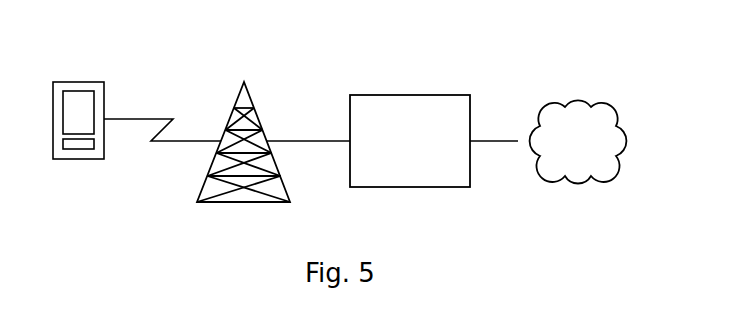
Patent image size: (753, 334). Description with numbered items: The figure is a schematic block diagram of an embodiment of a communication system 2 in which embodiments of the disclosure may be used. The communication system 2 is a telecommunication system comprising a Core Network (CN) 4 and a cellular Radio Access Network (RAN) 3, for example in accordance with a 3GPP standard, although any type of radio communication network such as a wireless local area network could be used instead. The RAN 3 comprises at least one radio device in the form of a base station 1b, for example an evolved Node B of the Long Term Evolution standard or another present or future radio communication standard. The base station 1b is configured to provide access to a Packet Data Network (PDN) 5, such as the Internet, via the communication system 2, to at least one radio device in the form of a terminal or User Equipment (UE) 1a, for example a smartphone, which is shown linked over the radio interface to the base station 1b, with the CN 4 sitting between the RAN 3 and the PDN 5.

The terminal or User Equipment (UE) 1a is at (68, 81).
The base station 1b is at (257, 108).
The communication system 2 is at (528, 58).
The Radio Access Network (RAN) 3 is at (303, 86).
The Core Network (CN) 4 is at (401, 137).
The Packet Data Network (PDN) 5 is at (571, 137).